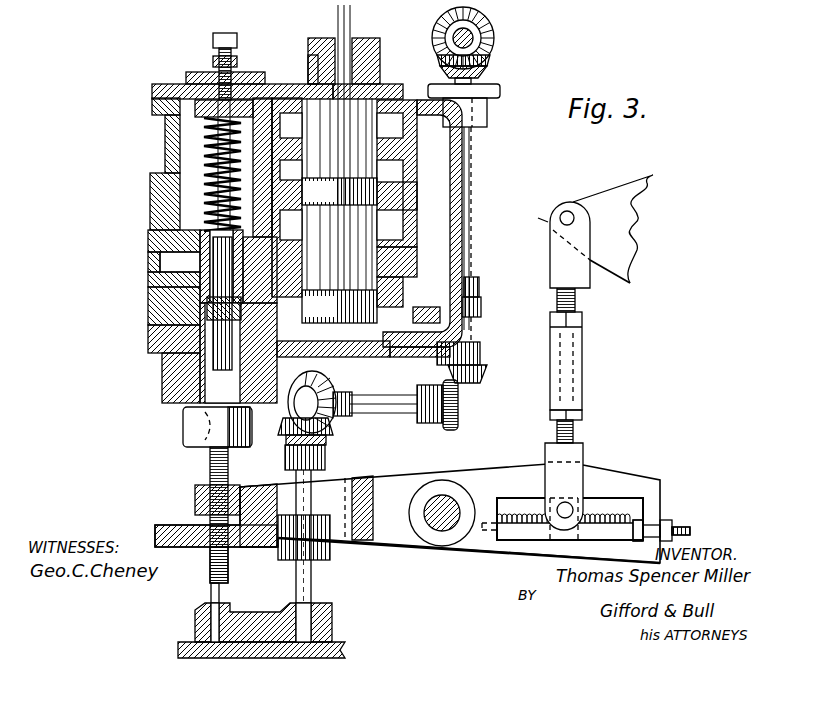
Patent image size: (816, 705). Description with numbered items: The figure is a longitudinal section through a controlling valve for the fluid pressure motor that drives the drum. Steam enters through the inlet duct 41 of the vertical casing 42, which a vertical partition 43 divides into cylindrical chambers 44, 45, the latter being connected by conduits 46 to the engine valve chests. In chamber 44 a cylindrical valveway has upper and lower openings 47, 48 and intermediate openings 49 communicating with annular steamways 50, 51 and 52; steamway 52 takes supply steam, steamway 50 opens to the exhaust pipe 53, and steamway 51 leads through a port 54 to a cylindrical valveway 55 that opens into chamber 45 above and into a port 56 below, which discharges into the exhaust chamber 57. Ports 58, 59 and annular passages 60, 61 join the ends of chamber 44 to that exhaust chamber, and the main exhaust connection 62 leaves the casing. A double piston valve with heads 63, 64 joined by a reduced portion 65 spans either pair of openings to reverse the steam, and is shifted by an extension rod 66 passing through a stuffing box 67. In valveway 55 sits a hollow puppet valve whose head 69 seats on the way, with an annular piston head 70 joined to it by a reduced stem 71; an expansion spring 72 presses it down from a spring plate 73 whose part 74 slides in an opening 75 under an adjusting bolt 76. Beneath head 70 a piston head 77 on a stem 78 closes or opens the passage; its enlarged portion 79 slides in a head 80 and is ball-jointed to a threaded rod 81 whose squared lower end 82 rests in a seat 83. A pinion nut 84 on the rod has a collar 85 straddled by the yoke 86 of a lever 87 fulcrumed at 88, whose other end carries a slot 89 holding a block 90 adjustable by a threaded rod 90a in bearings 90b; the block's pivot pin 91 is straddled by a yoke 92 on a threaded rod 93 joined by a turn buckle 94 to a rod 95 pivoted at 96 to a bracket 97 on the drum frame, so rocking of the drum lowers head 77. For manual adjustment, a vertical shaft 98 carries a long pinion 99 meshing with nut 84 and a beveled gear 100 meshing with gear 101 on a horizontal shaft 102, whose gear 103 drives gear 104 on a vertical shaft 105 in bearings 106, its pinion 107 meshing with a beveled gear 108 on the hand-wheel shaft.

The inlet duct 41 is at (533, 217).
The casing 42 is at (482, 330).
The vertical partition 43 is at (308, 82).
The cylindrical chamber 44 is at (370, 100).
The cylindrical chamber 45 is at (190, 153).
The conduits 46 is at (200, 213).
The upper openings 47 is at (362, 166).
The lower openings 48 is at (398, 281).
The intermediate openings 49 is at (400, 245).
The annular steamway 50 is at (403, 172).
The annular steamway 51 is at (426, 317).
The annular steamway 52 is at (417, 200).
The exhaust pipe 53 is at (243, 212).
The port 54 is at (200, 262).
The cylindrical valveway 55 is at (197, 293).
The port 56 is at (380, 413).
The exhaust chamber 57 is at (450, 147).
The port 58 is at (316, 72).
The port 59 is at (410, 358).
The annular passage 60 is at (244, 178).
The annular passage 61 is at (345, 358).
The main exhaust connection 62 is at (467, 232).
The valve head 63 is at (339, 194).
The valve head 64 is at (339, 306).
The reduced portion 65 is at (445, 245).
The extension rod 66 is at (350, 28).
The stuffing box 67 is at (372, 68).
The puppet valve head 69 is at (195, 232).
The annular piston head 70 is at (190, 305).
The reduced stem 71 is at (198, 272).
The expansion spring 72 is at (190, 128).
The spring plate 73 is at (172, 84).
The slidable part 74 is at (211, 73).
The opening 75 is at (248, 72).
The adjusting bolt 76 is at (221, 34).
The piston head 77 is at (172, 360).
The stem 78 is at (210, 385).
The enlarged cylindrical portion 79 is at (213, 410).
The head 80 is at (286, 456).
The threaded rod 81 is at (230, 462).
The squared lower end 82 is at (222, 603).
The seat 83 is at (197, 628).
The pinion nut 84 is at (180, 528).
The collar 85 is at (200, 505).
The yoke 86 is at (232, 550).
The lever 87 is at (408, 483).
The fulcrum 88 is at (437, 531).
The longitudinal slot 89 is at (613, 500).
The block 90 is at (562, 541).
The threaded rod 90a is at (636, 523).
The bearings 90b is at (672, 528).
The transverse pivot pin 91 is at (572, 505).
The yoke 92 is at (578, 452).
The threaded rod 93 is at (575, 423).
The turn buckle 94 is at (583, 347).
The threaded rod 95 is at (577, 302).
The pivot 96 is at (572, 203).
The bracket 97 is at (632, 182).
The vertical shaft 98 is at (312, 580).
The pinion 99 is at (332, 556).
The beveled gear 100 is at (330, 440).
The beveled gear 101 is at (293, 387).
The horizontal connecting shaft 102 is at (432, 424).
The beveled gear 103 is at (460, 420).
The beveled gear 104 is at (485, 378).
The vertical shaft 105 is at (473, 268).
The bearings 106 is at (488, 113).
The pinion 107 is at (492, 70).
The beveled gear 108 is at (495, 36).